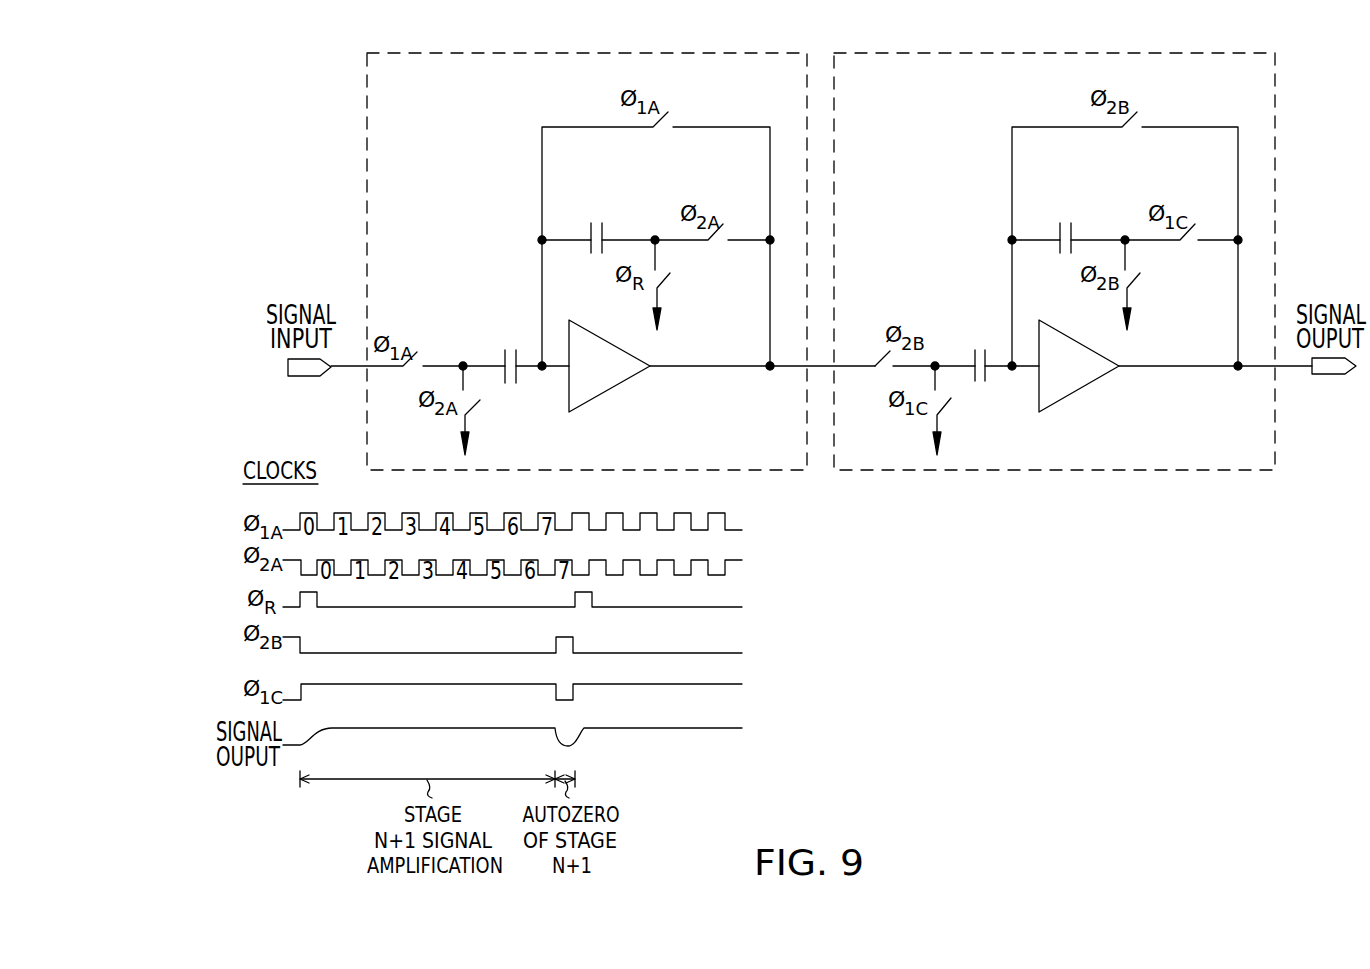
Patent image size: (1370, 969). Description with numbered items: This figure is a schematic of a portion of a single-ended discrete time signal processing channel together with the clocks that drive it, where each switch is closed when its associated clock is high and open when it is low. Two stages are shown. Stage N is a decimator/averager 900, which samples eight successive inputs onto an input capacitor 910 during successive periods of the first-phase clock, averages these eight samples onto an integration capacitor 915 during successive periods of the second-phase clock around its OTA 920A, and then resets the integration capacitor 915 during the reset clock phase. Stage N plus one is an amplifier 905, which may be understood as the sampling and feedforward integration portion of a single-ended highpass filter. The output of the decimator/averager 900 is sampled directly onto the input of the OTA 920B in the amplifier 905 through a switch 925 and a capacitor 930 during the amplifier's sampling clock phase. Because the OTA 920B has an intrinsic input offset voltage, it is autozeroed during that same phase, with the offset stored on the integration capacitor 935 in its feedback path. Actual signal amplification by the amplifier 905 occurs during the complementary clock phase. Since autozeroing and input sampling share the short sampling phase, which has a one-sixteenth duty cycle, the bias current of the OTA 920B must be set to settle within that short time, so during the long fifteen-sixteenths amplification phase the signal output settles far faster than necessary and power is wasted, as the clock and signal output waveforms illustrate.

The decimator/averager 900 is at (740, 52).
The amplifier 905 is at (1207, 52).
The input capacitor 910 is at (505, 352).
The integration capacitor 915 is at (604, 232).
The OTA 920A is at (607, 388).
The OTA 920B is at (1079, 388).
The switch 925 is at (882, 356).
The capacitor 930 is at (975, 352).
The integration capacitor 935 is at (1075, 232).